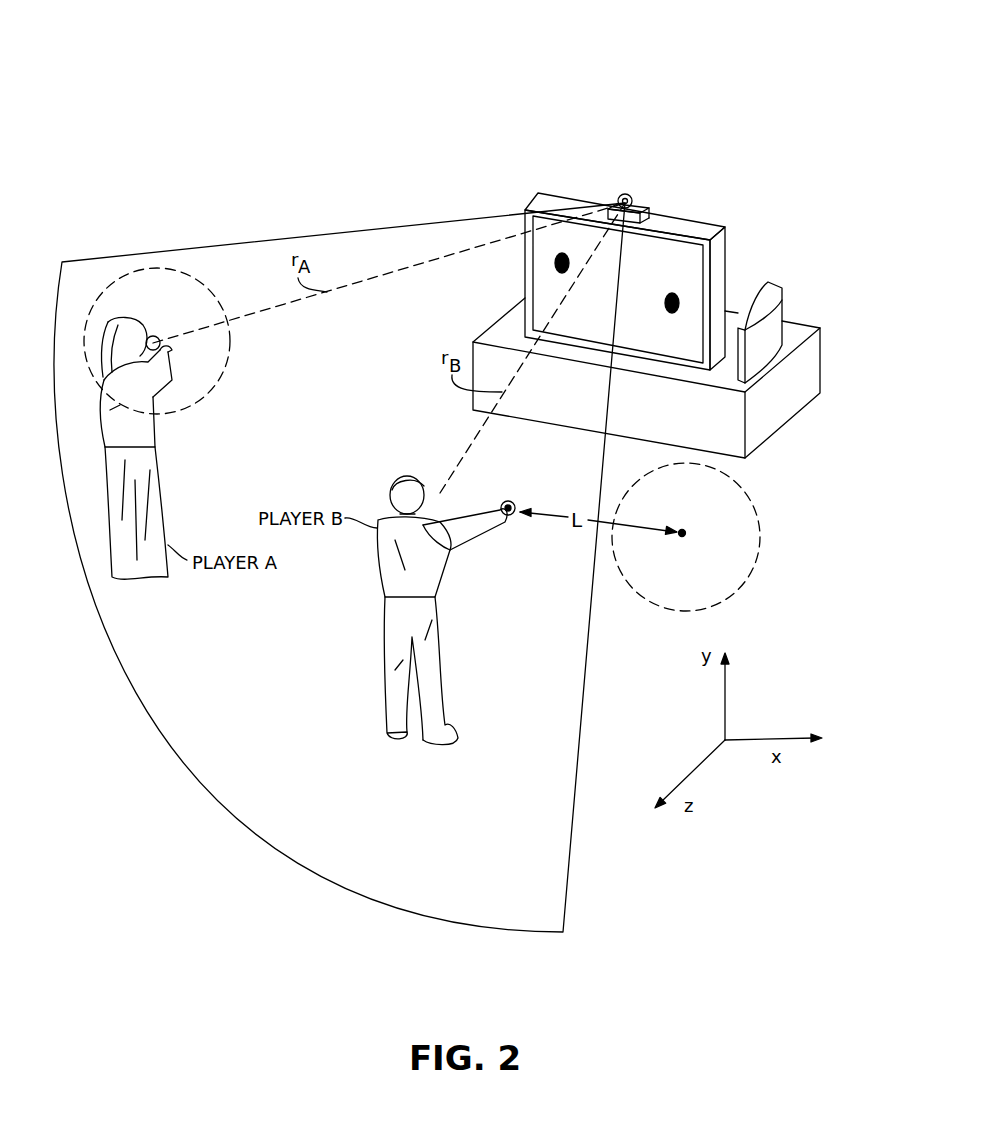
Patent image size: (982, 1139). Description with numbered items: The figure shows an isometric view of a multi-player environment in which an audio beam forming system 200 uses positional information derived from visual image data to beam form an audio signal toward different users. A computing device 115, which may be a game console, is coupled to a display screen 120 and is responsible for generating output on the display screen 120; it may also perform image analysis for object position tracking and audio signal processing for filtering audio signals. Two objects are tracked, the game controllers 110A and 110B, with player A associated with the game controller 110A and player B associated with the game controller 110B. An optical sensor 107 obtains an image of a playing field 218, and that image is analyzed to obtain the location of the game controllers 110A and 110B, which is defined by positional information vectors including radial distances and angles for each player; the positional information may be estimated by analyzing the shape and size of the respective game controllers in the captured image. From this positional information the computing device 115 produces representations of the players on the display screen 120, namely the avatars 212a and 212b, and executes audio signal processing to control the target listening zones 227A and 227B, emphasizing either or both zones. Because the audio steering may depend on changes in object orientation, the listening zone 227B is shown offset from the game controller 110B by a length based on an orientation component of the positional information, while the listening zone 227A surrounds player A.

The audio beam forming system 200 is at (725, 73).
The optical sensor 107 is at (633, 197).
The display screen 120 is at (688, 250).
The avatar 212a is at (556, 263).
The avatar 212b is at (679, 298).
The computing device 115 is at (783, 338).
The game controller 110A is at (155, 337).
The game controller 110B is at (513, 520).
The target listening zone 227A is at (150, 268).
The target listening zone 227B is at (365, 463).
The playing field 218 is at (505, 907).